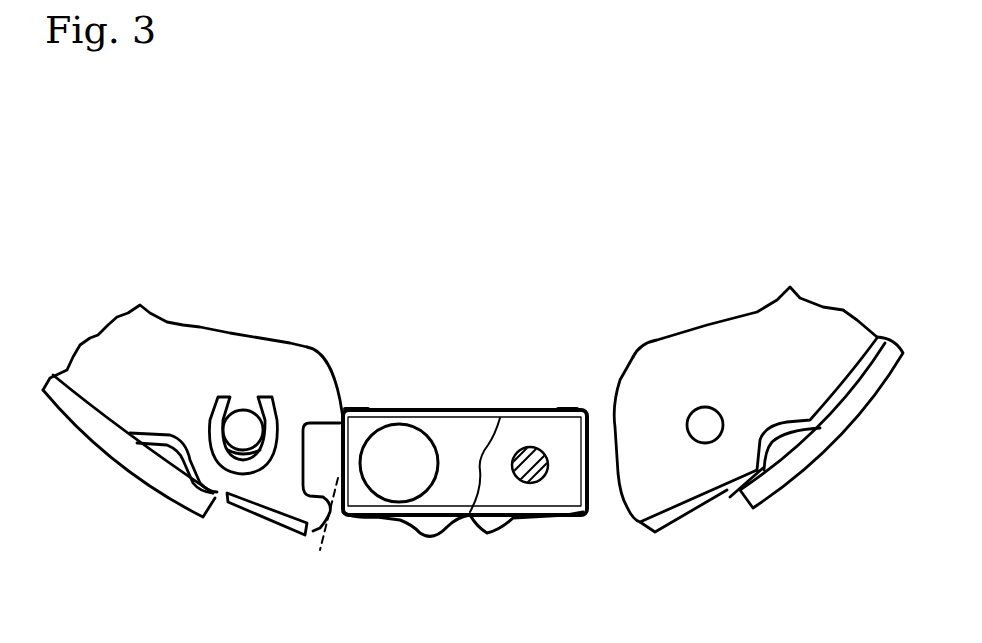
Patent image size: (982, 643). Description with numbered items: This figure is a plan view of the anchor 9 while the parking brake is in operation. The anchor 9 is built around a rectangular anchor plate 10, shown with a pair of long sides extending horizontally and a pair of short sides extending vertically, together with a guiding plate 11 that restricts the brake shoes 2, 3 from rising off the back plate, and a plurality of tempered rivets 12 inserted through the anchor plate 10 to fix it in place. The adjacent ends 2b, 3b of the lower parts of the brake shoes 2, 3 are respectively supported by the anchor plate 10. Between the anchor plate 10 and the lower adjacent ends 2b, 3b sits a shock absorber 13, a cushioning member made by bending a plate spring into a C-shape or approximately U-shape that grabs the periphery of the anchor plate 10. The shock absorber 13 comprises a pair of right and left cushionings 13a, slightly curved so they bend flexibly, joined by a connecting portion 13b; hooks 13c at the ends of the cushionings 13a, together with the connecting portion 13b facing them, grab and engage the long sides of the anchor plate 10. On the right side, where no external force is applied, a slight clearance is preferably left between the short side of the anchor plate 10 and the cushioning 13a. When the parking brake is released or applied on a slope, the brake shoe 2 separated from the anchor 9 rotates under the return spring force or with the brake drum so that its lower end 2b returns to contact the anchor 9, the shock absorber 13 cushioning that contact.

The brake shoe 2 is at (713, 322).
The lower adjacent end of brake shoe 2b is at (645, 392).
The brake shoe 3 is at (170, 318).
The lower adjacent end of brake shoe 3b is at (305, 370).
The anchor 9 is at (515, 350).
The rectangular anchor plate 10 is at (518, 427).
The guiding plate 11 is at (455, 430).
The rivet 12 is at (403, 440).
The shock absorber 13 is at (488, 540).
The cushioning 13a is at (613, 553).
The connecting portion 13b is at (417, 532).
The hook 13c is at (360, 407).